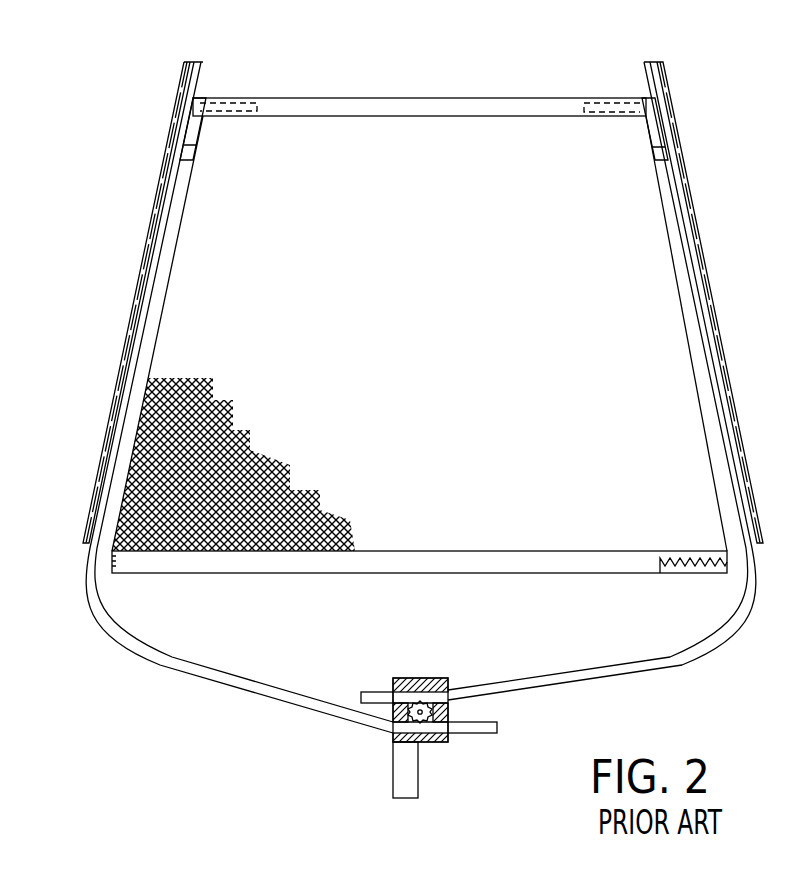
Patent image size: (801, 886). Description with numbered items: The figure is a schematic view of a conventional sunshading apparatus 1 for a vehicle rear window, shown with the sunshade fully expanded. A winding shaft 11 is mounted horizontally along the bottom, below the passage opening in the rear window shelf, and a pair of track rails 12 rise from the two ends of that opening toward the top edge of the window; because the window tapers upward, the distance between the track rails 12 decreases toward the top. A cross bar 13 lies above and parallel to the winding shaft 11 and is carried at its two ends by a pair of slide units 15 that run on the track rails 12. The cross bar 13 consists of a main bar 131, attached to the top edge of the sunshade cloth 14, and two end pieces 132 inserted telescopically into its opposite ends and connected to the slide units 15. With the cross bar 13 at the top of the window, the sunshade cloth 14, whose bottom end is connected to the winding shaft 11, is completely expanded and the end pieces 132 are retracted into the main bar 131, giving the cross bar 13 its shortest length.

The sunshading apparatus 1 is at (716, 108).
The winding shaft 11 is at (138, 563).
The track rails 12 is at (124, 345).
The cross bar 13 is at (420, 86).
The main bar 131 is at (340, 113).
The end pieces 132 is at (251, 100).
The sunshade cloth 14 is at (162, 450).
The slide units 15 is at (183, 128).